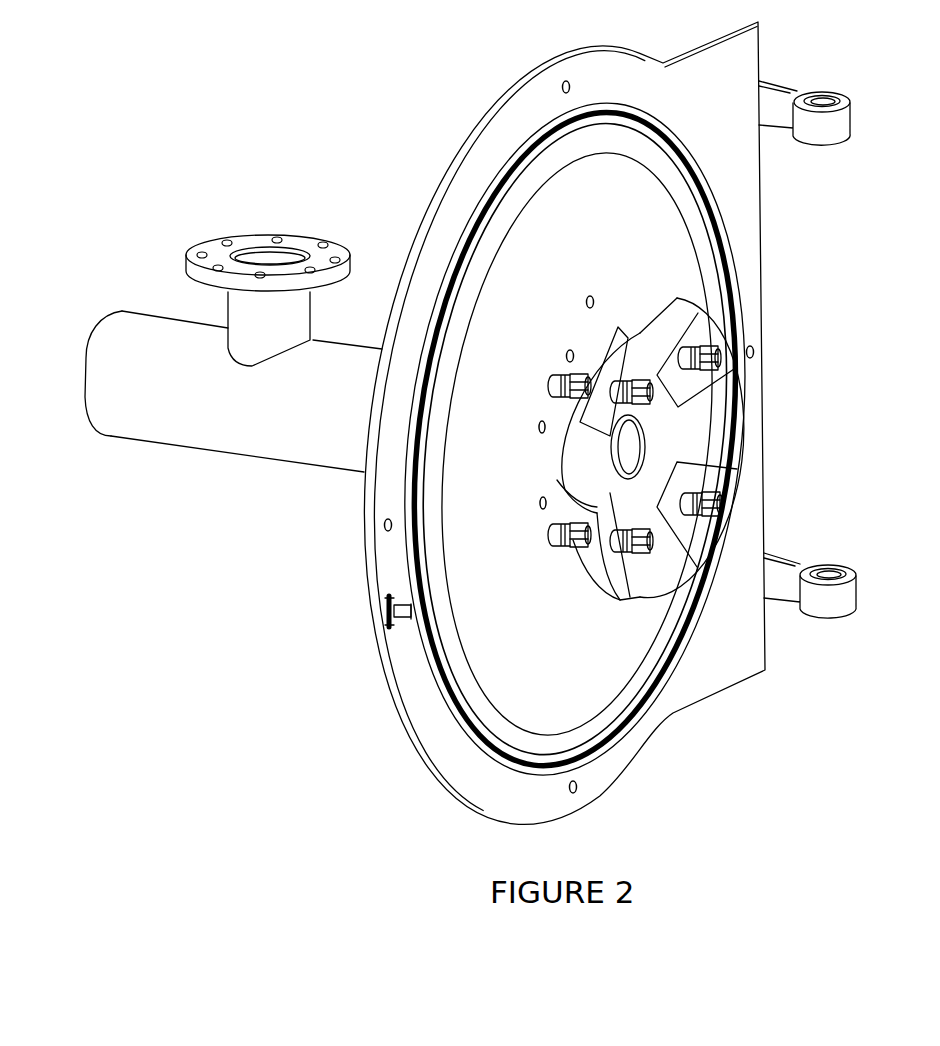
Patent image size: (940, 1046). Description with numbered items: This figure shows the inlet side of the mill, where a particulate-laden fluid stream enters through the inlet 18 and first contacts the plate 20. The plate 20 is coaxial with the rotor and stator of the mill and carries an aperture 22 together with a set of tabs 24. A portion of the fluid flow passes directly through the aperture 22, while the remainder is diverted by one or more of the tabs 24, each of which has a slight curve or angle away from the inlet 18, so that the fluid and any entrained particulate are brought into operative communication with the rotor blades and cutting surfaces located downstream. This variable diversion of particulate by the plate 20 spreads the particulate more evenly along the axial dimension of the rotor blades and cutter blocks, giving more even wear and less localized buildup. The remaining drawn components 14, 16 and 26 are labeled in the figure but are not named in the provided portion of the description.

The housing cover plate 14 is at (531, 283).
The mounting lug 16 is at (838, 126).
The inlet 18 is at (287, 406).
The plate 20 is at (749, 404).
The aperture 22 is at (604, 459).
The tabs 24 is at (666, 562).
The stud fastener 26 is at (602, 564).